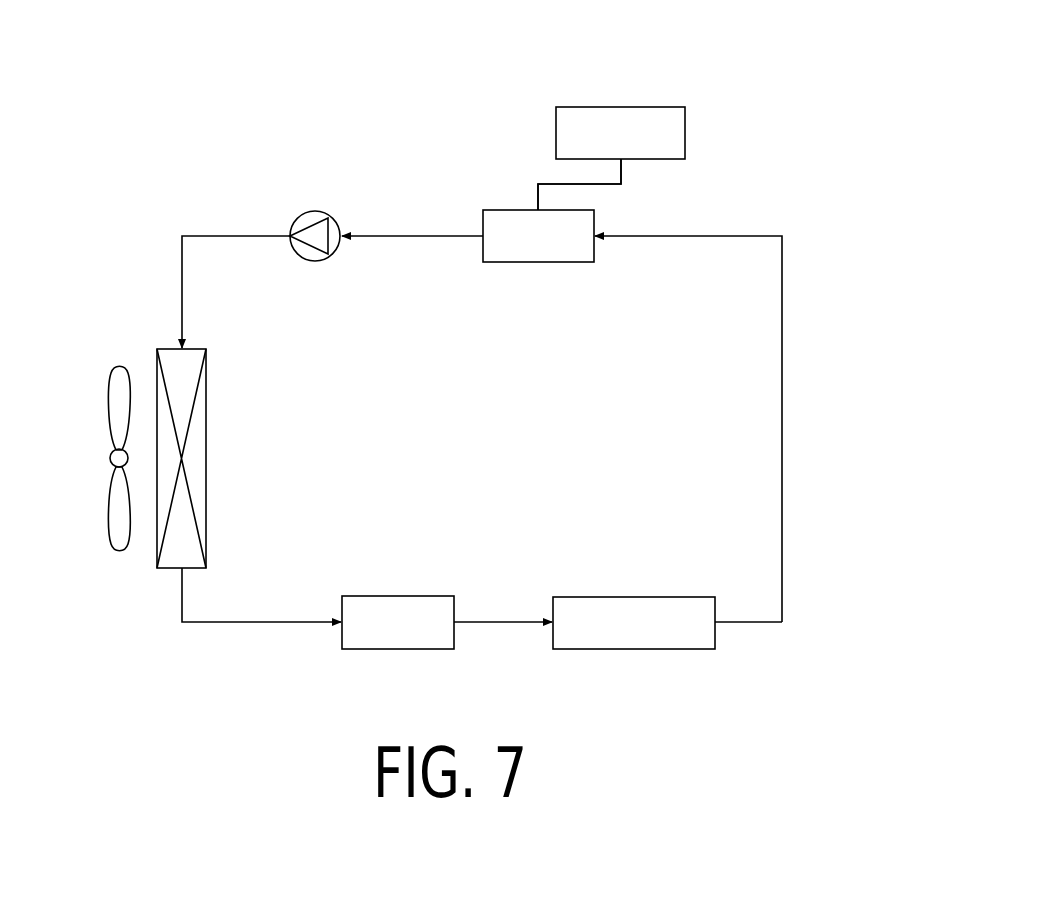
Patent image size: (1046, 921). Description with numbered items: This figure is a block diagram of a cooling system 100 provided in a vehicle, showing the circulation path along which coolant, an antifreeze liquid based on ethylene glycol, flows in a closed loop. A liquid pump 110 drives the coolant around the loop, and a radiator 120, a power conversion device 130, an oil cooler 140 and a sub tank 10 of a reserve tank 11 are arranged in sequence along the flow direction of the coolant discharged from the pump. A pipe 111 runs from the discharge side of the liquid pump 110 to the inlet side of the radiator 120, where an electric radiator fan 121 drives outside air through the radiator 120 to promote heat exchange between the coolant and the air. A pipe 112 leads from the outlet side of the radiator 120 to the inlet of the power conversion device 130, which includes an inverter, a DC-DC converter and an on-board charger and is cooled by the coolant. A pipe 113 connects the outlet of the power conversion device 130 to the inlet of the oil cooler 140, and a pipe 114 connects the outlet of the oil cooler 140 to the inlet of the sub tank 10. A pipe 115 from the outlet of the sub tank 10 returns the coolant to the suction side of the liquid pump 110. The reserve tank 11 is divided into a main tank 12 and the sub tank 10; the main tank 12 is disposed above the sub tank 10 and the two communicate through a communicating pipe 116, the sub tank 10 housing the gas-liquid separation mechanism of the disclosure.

The cooling system 100 is at (375, 84).
The reserve tank 11 is at (535, 147).
The main tank 12 is at (665, 106).
The communicating pipe 116 is at (623, 172).
The sub tank 10 is at (562, 263).
The liquid pump 110 is at (325, 211).
The pipe 115 is at (421, 234).
The pipe 114 is at (783, 452).
The pipe 111 is at (181, 282).
The radiator 120 is at (207, 405).
The electric radiator fan 121 is at (110, 408).
The pipe 112 is at (260, 624).
The power conversion device 130 is at (418, 595).
The pipe 113 is at (512, 624).
The oil cooler 140 is at (663, 596).